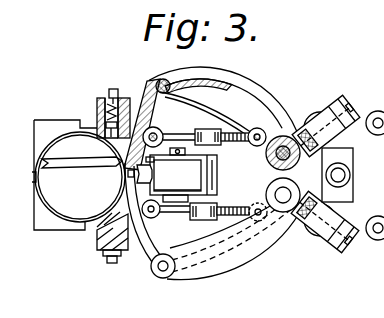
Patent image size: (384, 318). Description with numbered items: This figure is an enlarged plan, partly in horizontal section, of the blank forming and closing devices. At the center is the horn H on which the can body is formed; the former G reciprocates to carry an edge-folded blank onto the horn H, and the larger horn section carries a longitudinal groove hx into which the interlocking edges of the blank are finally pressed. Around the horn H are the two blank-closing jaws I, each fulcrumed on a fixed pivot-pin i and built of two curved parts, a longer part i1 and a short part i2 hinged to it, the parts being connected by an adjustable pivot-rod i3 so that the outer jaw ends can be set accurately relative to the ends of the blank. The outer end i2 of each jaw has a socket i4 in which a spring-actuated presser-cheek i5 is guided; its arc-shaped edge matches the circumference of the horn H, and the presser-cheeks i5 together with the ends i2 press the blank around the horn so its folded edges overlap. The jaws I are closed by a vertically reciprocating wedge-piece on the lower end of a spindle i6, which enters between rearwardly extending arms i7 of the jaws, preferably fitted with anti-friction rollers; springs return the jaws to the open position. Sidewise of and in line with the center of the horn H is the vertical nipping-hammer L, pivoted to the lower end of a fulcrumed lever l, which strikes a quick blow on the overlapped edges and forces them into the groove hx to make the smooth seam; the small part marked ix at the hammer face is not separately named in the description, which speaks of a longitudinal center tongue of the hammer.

The horn H is at (80, 177).
The former G is at (64, 178).
The longitudinal groove hx is at (127, 175).
The connecting piece ix is at (145, 160).
The blank-closing jaws I is at (159, 110).
The fixed pivot-pins i is at (272, 163).
The longer part of jaw i1 is at (230, 178).
The short part of jaw i2 is at (151, 98).
The adjustable pivot-rod i3 is at (215, 130).
The socket i4 is at (105, 110).
The presser-cheek i5 is at (102, 125).
The spindle i6 is at (340, 176).
The rearwardly-extending arms i7 is at (342, 110).
The nipping-hammer L is at (183, 175).
The lever l is at (220, 175).